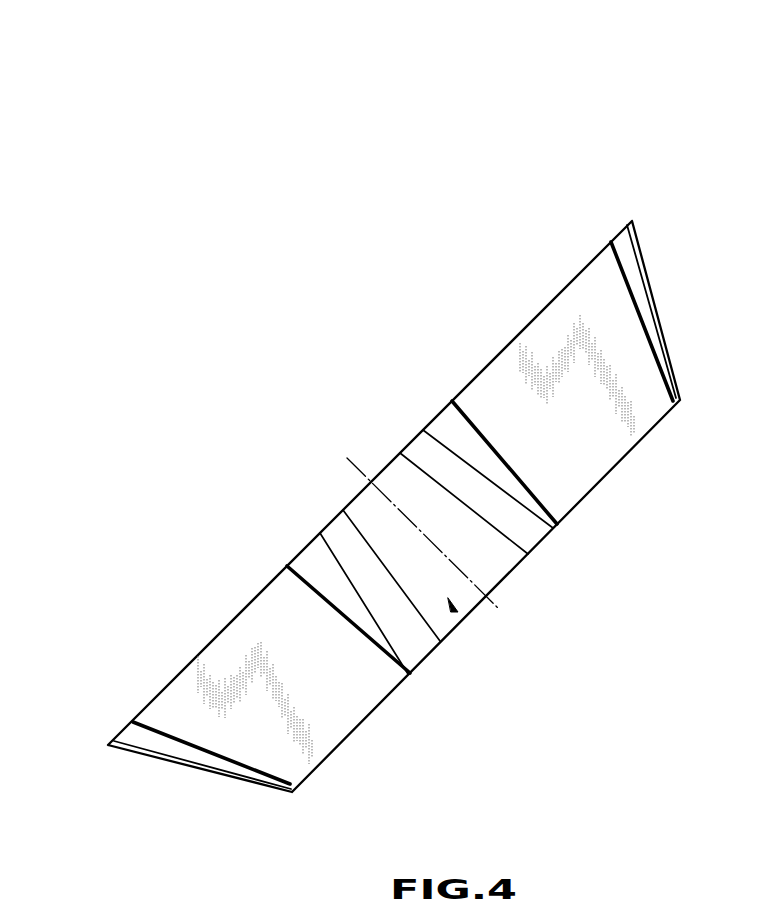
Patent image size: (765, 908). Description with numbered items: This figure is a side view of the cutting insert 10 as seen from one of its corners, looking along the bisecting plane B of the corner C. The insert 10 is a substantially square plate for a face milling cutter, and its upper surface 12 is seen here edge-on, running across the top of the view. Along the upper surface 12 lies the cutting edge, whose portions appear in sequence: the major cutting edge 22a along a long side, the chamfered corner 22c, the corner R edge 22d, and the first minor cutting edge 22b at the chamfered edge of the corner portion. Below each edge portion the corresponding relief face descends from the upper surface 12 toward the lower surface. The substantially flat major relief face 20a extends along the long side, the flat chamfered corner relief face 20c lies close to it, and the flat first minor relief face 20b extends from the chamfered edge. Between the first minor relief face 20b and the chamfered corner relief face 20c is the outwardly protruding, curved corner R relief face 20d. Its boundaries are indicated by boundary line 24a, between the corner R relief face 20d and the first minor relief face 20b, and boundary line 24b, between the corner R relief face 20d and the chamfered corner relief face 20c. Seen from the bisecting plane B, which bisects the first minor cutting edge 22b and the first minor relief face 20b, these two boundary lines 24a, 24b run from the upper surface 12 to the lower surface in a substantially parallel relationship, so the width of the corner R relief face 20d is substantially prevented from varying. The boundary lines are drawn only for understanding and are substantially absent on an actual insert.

The cutting insert 10 is at (632, 116).
The upper surface 12 is at (247, 604).
The major relief face 20a is at (317, 733).
The first minor relief face 20b is at (438, 620).
The chamfered corner relief face 20c is at (345, 600).
The corner R relief face 20d is at (383, 603).
The major cutting edge 22a is at (185, 667).
The first minor cutting edge 22b is at (397, 456).
The chamfered corner 22c is at (130, 724).
The corner R edge 22d is at (322, 530).
The boundary line 24a is at (412, 618).
The boundary line 24b is at (333, 558).
The bisecting plane B is at (512, 598).
The corner C is at (453, 609).